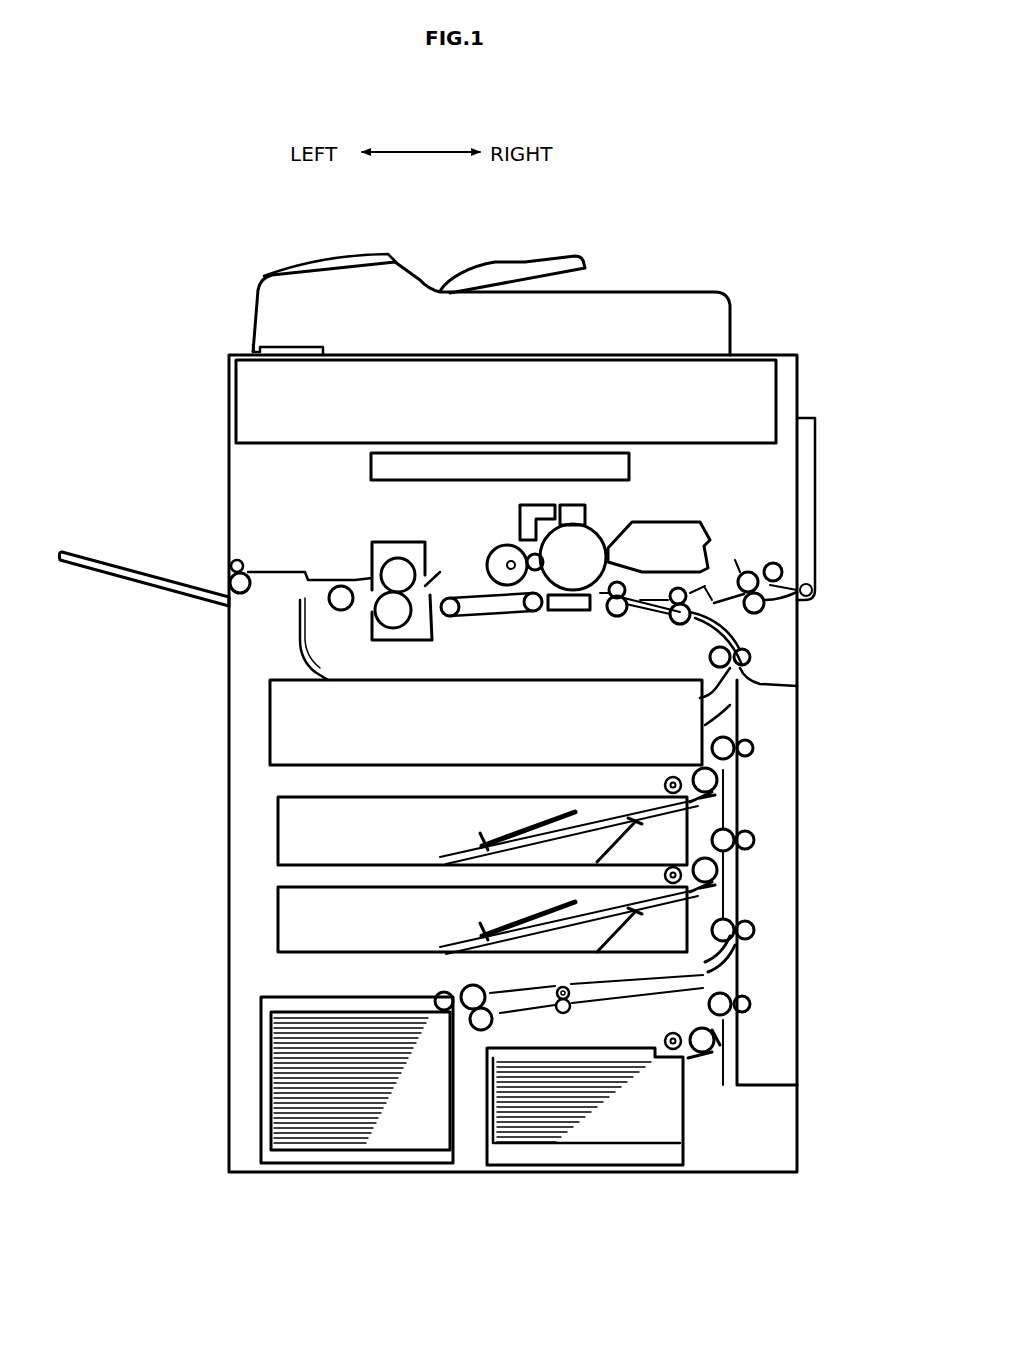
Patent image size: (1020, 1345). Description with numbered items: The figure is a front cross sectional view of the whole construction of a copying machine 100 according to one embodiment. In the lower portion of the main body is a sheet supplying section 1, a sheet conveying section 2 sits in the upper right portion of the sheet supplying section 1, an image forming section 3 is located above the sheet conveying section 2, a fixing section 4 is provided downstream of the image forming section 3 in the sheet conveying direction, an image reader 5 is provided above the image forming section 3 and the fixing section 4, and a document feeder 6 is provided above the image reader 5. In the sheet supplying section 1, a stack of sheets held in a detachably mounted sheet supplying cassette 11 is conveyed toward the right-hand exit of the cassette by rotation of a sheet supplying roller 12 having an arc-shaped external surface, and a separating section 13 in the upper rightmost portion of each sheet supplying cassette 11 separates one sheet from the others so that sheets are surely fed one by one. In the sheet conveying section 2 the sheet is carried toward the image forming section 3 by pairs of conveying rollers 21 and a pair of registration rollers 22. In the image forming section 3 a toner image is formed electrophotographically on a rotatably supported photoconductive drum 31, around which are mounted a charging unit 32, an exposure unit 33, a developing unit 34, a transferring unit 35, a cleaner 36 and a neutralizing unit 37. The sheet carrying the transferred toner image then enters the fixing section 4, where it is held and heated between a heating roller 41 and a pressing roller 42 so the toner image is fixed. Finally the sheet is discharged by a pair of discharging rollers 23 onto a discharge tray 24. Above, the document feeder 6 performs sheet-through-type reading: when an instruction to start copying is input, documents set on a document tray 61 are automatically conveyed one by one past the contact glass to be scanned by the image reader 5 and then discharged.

The copying machine 100 is at (292, 240).
The document feeder 6 is at (245, 303).
The document tray 61 is at (490, 262).
The sheet supplying section 1 is at (262, 944).
The image reader 5 is at (272, 393).
The fixing section 4 is at (350, 553).
The heating roller 41 is at (398, 558).
The pressing roller 42 is at (394, 630).
The image forming section 3 is at (612, 520).
The photoconductive drum 31 is at (604, 590).
The charging unit 32 is at (575, 505).
The exposure unit 33 is at (630, 466).
The developing unit 34 is at (637, 575).
The transferring unit 35 is at (563, 610).
The cleaner 36 is at (495, 562).
The neutralizing unit 37 is at (537, 505).
The sheet conveying section 2 is at (766, 650).
The conveying rollers 21 is at (752, 1000).
The registration rollers 22 is at (689, 616).
The discharging rollers 23 is at (243, 596).
The discharge tray 24 is at (112, 578).
The sheet supplying cassette 11 is at (278, 906).
The sheet supplying roller 12 is at (665, 786).
The separating section 13 is at (716, 796).